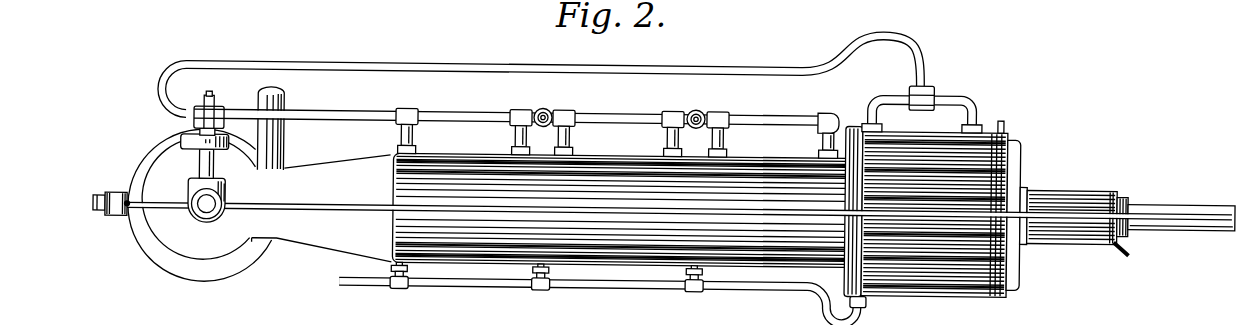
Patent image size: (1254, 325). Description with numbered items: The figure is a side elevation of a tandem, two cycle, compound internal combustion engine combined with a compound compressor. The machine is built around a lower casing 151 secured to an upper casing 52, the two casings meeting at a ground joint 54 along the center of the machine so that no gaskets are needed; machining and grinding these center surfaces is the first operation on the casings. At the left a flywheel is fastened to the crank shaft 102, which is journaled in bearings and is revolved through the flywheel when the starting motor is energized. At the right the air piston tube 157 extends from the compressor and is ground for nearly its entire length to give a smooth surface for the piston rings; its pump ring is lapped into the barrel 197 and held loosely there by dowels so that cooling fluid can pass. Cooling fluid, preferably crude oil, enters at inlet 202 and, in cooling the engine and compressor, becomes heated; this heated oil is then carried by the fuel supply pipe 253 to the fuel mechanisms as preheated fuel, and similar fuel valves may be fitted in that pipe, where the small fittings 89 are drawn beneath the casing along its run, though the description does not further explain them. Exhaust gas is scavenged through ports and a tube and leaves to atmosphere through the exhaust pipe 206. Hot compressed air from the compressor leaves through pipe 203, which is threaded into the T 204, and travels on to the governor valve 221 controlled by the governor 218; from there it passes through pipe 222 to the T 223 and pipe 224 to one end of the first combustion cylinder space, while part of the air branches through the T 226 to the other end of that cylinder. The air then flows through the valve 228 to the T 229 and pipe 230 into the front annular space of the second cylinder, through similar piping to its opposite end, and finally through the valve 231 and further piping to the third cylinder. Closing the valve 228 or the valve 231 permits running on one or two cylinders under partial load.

The upper casing 52 is at (618, 210).
The ground joint 54 is at (360, 179).
The drain cocks 89 is at (409, 264).
The crank shaft 102 is at (187, 218).
The lower casing 151 is at (620, 237).
The air piston tube 157 is at (1192, 182).
The barrel 197 is at (1096, 174).
The fluid inlet 202 is at (1003, 117).
The pipe 203 is at (900, 82).
The T 204 is at (928, 80).
The exhaust pipe 206 is at (437, 68).
The governor 218 is at (176, 134).
The governor valve 221 is at (215, 106).
The pipe 222 is at (365, 108).
The T 223 is at (403, 110).
The pipe 224 is at (413, 133).
The T 226 is at (530, 97).
The valve 228 is at (546, 109).
The T 229 is at (571, 107).
The pipe 230 is at (570, 134).
The valve 231 is at (705, 98).
The fuel supply pipe 253 is at (578, 283).